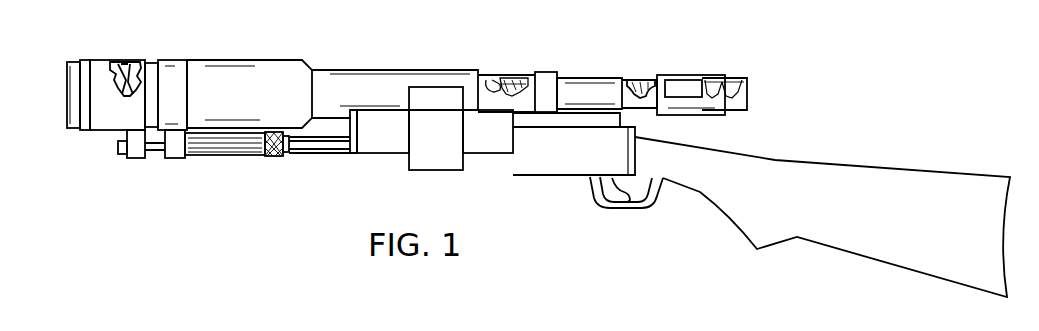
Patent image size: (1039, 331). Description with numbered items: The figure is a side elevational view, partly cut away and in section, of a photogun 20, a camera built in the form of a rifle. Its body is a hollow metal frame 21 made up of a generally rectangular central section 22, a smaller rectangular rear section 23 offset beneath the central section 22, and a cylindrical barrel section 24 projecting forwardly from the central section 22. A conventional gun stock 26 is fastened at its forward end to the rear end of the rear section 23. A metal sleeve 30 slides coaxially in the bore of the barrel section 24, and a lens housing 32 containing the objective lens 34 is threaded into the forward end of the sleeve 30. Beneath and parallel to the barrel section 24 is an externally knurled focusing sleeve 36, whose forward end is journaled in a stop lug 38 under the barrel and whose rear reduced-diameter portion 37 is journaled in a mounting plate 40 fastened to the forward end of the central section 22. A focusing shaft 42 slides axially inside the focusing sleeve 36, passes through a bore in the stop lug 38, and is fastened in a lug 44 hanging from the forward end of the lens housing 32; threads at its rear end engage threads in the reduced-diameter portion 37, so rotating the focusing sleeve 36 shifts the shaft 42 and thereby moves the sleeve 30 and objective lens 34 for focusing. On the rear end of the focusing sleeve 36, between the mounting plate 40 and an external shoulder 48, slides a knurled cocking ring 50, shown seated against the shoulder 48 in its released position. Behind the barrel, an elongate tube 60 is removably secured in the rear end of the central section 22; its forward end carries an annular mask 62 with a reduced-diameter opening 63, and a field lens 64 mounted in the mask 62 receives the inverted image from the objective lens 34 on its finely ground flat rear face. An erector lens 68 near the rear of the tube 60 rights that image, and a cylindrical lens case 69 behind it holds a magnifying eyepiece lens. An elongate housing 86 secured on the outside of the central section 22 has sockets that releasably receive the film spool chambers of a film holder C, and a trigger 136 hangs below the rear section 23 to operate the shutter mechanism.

The photogun 20 is at (450, 58).
The frame 21 is at (349, 69).
The central section 22 is at (401, 72).
The rear section 23 is at (549, 176).
The barrel section 24 is at (243, 62).
The gun stock 26 is at (908, 170).
The sleeve 30 is at (153, 63).
The lens housing 32 is at (93, 60).
The objective lens 34 is at (120, 62).
The focusing sleeve 36 is at (222, 156).
The reduced-diameter portion 37 is at (306, 154).
The stop lug 38 is at (172, 158).
The mounting plate 40 is at (353, 155).
The focusing shaft 42 is at (155, 152).
The lug 44 is at (133, 158).
The external shoulder 48 is at (270, 157).
The cocking ring 50 is at (286, 153).
The tube 60 is at (550, 72).
The annular mask 62 is at (488, 78).
The reduced-diameter opening 63 is at (522, 78).
The field lens 64 is at (507, 87).
The erector lens 68 is at (650, 80).
The lens case 69 is at (737, 78).
The housing 86 is at (394, 156).
The film holder C is at (445, 171).
The trigger 136 is at (612, 208).